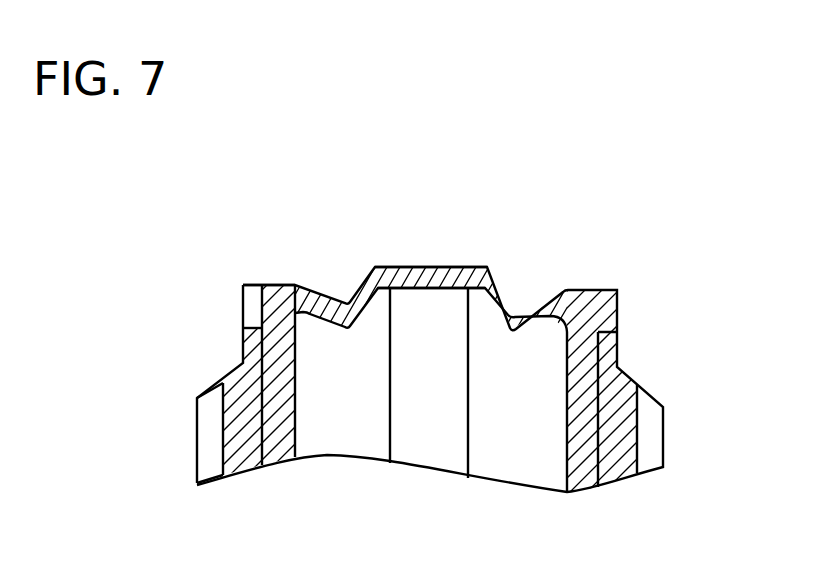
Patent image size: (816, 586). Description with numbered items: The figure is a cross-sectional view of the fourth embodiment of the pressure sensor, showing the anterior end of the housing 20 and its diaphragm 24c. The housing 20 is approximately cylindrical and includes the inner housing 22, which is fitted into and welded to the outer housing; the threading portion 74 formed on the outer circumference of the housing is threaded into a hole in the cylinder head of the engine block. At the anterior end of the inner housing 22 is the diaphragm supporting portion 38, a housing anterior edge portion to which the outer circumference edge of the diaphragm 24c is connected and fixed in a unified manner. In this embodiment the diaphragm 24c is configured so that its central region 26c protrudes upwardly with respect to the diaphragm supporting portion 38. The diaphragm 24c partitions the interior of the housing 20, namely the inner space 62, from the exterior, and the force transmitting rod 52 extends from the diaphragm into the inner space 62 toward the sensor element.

The housing 20 is at (210, 372).
The diaphragm supporting portion 38 is at (263, 302).
The inner housing 22 is at (277, 465).
The inner space 62 is at (243, 458).
The threading portion 74 is at (210, 473).
The diaphragm 24c is at (405, 256).
The central region 26c is at (462, 265).
The force transmitting rod 52 is at (430, 457).